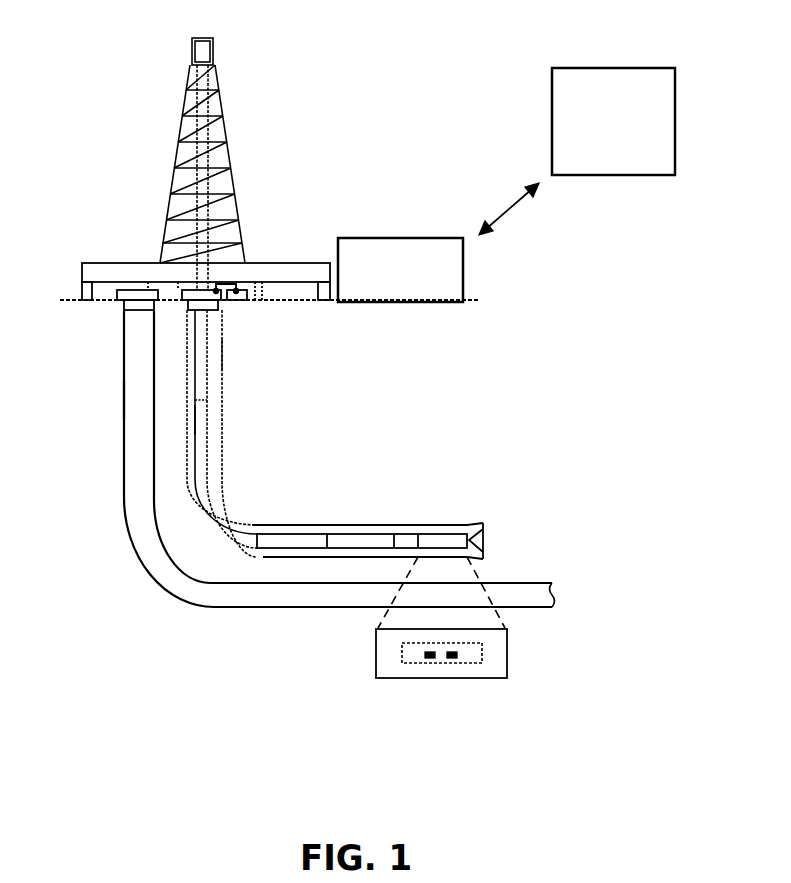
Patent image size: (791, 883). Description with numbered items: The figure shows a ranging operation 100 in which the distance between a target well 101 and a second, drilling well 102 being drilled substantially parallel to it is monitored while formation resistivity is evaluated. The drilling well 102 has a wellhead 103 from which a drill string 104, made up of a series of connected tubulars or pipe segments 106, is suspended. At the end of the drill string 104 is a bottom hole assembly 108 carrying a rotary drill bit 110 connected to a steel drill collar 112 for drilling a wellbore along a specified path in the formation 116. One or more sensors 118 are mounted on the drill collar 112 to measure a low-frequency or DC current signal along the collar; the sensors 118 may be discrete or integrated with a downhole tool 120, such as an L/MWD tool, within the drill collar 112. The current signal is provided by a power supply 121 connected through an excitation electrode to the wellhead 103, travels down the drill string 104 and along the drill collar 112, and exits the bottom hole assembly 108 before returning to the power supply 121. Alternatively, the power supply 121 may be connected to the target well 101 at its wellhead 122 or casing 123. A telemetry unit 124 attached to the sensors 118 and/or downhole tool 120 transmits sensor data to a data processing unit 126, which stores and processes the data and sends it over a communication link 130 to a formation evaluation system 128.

The ranging operation 100 is at (345, 115).
The target well 101 is at (100, 503).
The drilling well 102 is at (246, 503).
The wellhead 103 is at (182, 293).
The drill string 104 is at (208, 424).
The pipe segments 106 is at (202, 357).
The bottom hole assembly 108 is at (514, 507).
The rotary drill bit 110 is at (486, 538).
The drill collar 112 is at (456, 533).
The formation 116 is at (421, 404).
The sensors 118 is at (455, 660).
The downhole tool 120 is at (402, 652).
The power supply 121 is at (238, 289).
The wellhead 122 is at (117, 297).
The casing 123 is at (124, 404).
The telemetry unit 124 is at (403, 533).
The data processing unit 126 is at (405, 238).
The formation evaluation system 128 is at (610, 68).
The communication link 130 is at (509, 208).